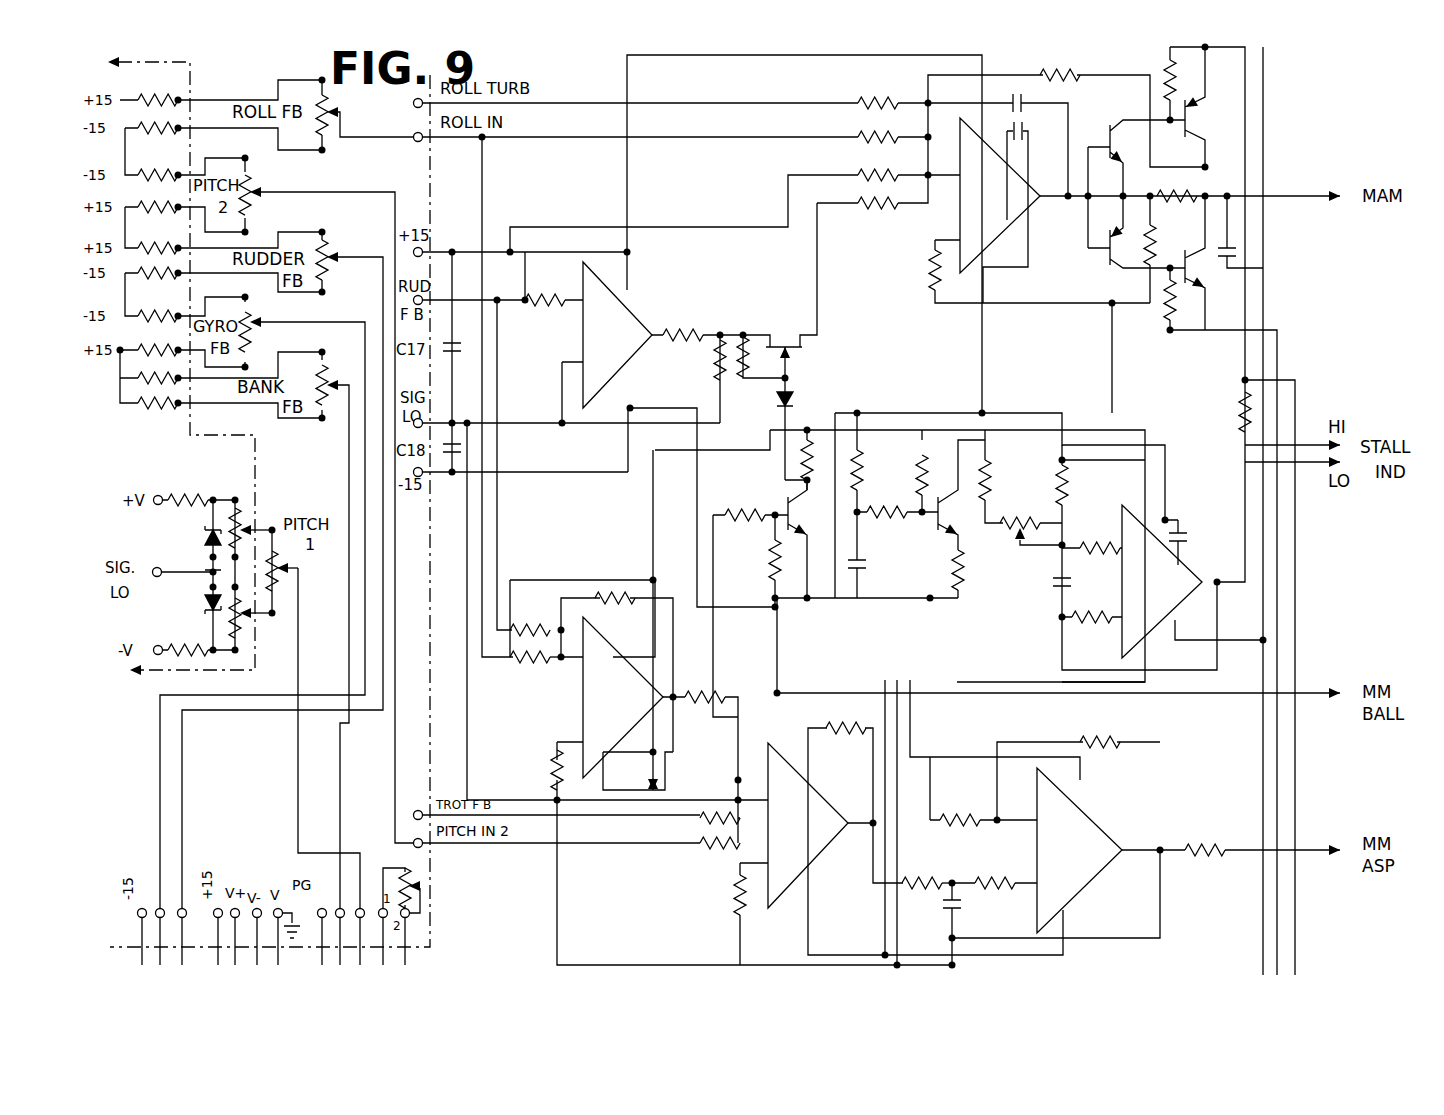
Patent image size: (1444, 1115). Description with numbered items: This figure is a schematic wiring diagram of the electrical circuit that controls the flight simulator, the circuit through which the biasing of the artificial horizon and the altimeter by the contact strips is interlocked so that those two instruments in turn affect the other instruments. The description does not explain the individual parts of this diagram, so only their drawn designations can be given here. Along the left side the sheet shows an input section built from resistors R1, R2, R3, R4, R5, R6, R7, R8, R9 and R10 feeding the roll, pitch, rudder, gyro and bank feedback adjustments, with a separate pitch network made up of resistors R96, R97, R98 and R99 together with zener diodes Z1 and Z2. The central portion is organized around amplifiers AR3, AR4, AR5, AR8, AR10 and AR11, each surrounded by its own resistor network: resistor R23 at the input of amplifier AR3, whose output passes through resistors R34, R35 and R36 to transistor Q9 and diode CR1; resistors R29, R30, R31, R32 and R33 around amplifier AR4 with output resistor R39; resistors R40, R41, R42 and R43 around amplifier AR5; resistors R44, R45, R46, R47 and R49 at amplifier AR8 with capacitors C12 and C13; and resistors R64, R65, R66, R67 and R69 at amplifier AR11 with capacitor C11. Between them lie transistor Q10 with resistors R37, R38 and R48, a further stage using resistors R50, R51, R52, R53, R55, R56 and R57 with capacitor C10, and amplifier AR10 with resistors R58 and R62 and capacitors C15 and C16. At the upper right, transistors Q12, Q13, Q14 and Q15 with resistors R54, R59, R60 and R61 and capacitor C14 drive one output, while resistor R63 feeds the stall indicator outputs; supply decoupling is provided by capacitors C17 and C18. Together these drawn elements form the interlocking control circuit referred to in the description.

The resistor R1 is at (160, 92).
The resistor R2 is at (158, 120).
The resistor R3 is at (158, 166).
The resistor R4 is at (158, 199).
The resistor R5 is at (158, 240).
The resistor R6 is at (158, 265).
The resistor R7 is at (158, 308).
The resistor R8 is at (158, 342).
The resistor R9 is at (158, 370).
The resistor R10 is at (159, 413).
The resistor R23 is at (545, 289).
The resistor R29 is at (530, 617).
The resistor R30 is at (535, 667).
The resistor R31 is at (550, 770).
The resistor R32 is at (615, 608).
The resistor R33 is at (628, 795).
The resistor R34 is at (683, 324).
The resistor R35 is at (699, 360).
The resistor R36 is at (737, 342).
The resistor R37 is at (747, 505).
The resistor R38 is at (763, 568).
The resistor R39 is at (723, 755).
The resistor R40 is at (843, 737).
The resistor R41 is at (698, 828).
The resistor R42 is at (695, 852).
The resistor R43 is at (730, 916).
The resistor R44 is at (878, 92).
The resistor R45 is at (878, 127).
The resistor R46 is at (878, 164).
The resistor R47 is at (859, 194).
The resistor R48 is at (798, 458).
The resistor R49 is at (927, 286).
The resistor R50 is at (874, 481).
The resistor R51 is at (897, 523).
The resistor R52 is at (915, 476).
The resistor R53 is at (975, 570).
The resistor R54 is at (1057, 63).
The resistor R55 is at (1002, 484).
The potentiometer R56 is at (1031, 520).
The resistor R57 is at (1077, 531).
The resistor R58 is at (1092, 540).
The resistor R59 is at (1177, 187).
The resistor R60 is at (1166, 72).
The resistor R61 is at (1164, 308).
The resistor R62 is at (1092, 630).
The resistor R63 is at (1237, 414).
The resistor R64 is at (963, 810).
The resistor R65 is at (1096, 731).
The resistor R66 is at (927, 871).
The resistor R67 is at (994, 871).
The resistor R69 is at (1262, 837).
The resistor R96 is at (186, 487).
The resistor R97 is at (199, 659).
The potentiometer R98 is at (248, 522).
The potentiometer R99 is at (260, 621).
The capacitor C10 is at (874, 555).
The capacitor C11 is at (966, 924).
The capacitor C12 is at (1036, 126).
The capacitor C13 is at (1031, 95).
The capacitor C14 is at (1240, 252).
The capacitor C15 is at (1185, 538).
The capacitor C16 is at (1053, 584).
The capacitor C17 is at (442, 348).
The capacitor C18 is at (442, 448).
The field effect transistor Q9 is at (788, 338).
The transistor Q10 is at (806, 539).
The transistor Q12 is at (1147, 158).
The transistor Q13 is at (1146, 232).
The transistor Q14 is at (1203, 107).
The transistor Q15 is at (1204, 263).
The diode CR1 is at (790, 400).
The zener diode Z1 is at (197, 536).
The zener diode Z2 is at (195, 620).
The operational amplifier AR3 is at (617, 335).
The operational amplifier AR4 is at (623, 697).
The operational amplifier AR5 is at (808, 825).
The operational amplifier AR8 is at (1000, 195).
The operational amplifier AR10 is at (1162, 581).
The operational amplifier AR11 is at (1079, 850).